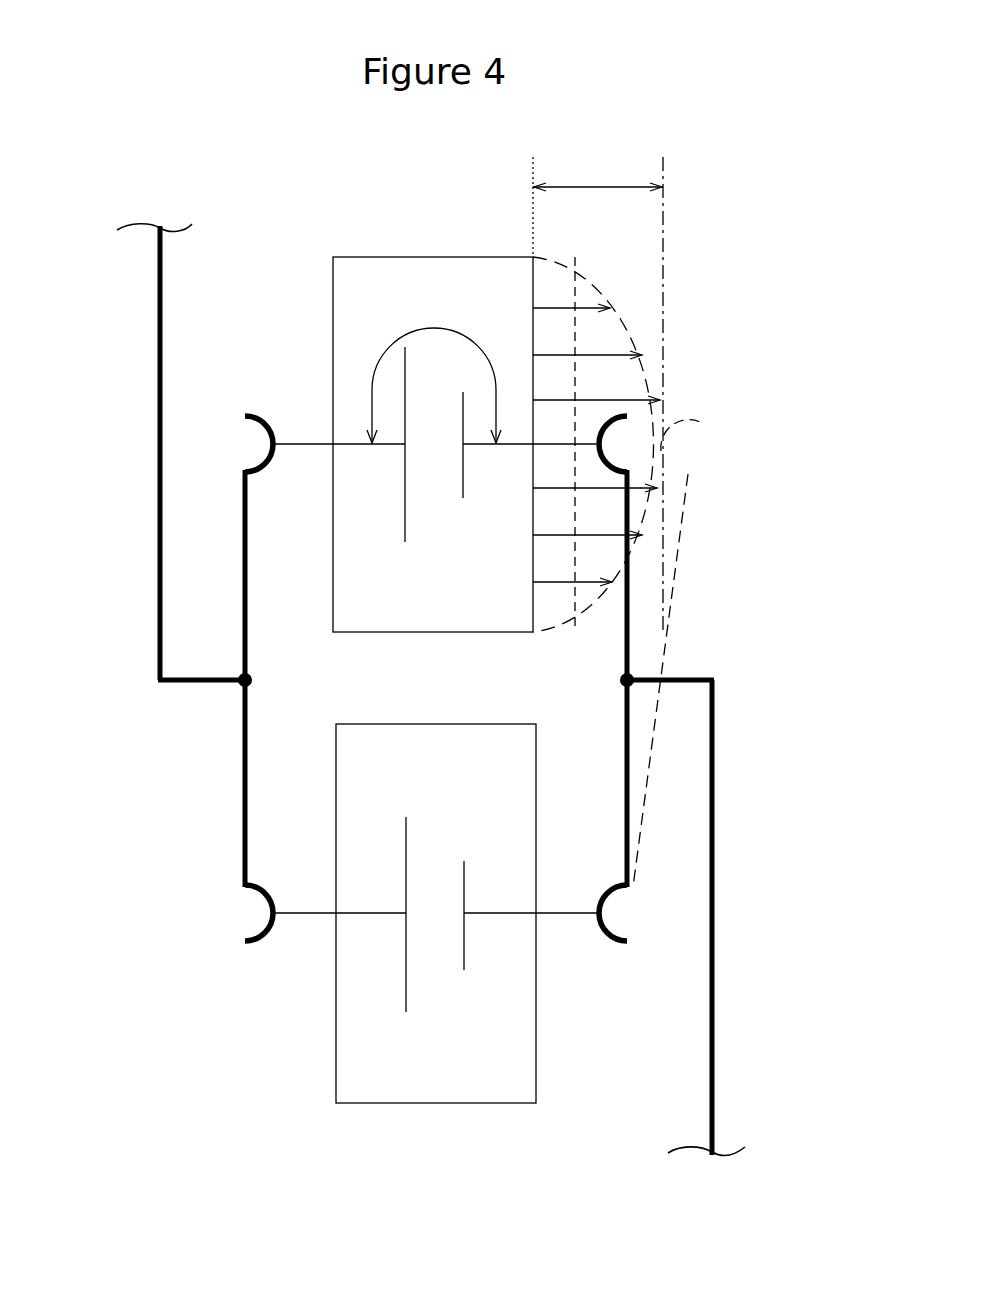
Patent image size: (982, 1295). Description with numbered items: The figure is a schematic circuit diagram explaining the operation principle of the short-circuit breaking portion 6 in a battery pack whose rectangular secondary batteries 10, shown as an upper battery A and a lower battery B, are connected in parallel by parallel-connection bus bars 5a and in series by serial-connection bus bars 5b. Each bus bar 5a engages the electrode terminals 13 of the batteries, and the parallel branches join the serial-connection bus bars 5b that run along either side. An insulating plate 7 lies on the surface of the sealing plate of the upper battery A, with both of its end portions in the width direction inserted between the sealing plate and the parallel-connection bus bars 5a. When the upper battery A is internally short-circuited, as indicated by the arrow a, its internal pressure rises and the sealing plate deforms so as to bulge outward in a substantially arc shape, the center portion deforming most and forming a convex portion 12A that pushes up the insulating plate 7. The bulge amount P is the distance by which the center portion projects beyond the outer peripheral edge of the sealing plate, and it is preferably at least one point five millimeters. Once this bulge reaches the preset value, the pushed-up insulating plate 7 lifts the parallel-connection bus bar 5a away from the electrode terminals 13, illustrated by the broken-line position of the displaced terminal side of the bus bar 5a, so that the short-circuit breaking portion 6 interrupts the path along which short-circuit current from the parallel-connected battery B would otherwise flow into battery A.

The rectangular secondary battery 10 is at (364, 257).
The electrode terminal 13 is at (273, 448).
The parallel-connection bus bar 5a is at (244, 780).
The serial-connection bus bar 5b is at (160, 512).
The insulating plate 7 is at (572, 340).
The convex portion of the sealing plate 12A is at (633, 320).
The short-circuit breaking portion 6 is at (690, 400).
The bulge amount P is at (598, 175).
The internal short-circuit arrow a is at (434, 378).